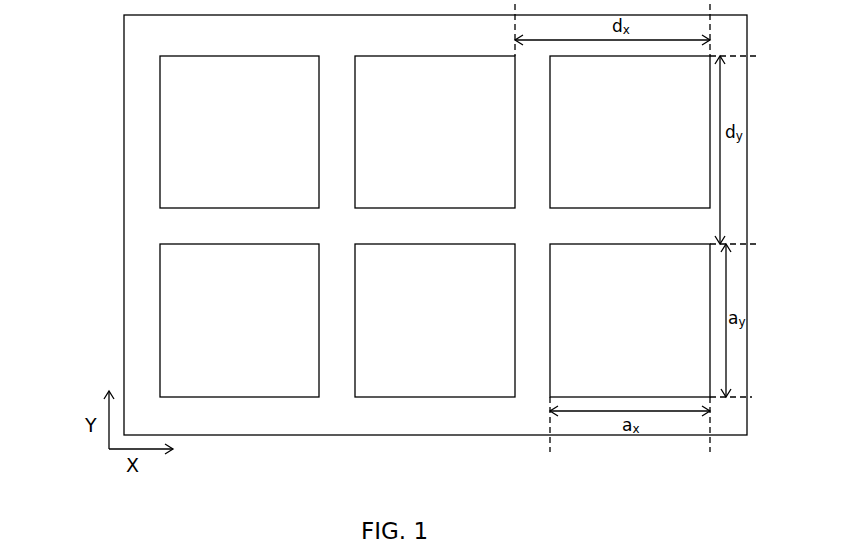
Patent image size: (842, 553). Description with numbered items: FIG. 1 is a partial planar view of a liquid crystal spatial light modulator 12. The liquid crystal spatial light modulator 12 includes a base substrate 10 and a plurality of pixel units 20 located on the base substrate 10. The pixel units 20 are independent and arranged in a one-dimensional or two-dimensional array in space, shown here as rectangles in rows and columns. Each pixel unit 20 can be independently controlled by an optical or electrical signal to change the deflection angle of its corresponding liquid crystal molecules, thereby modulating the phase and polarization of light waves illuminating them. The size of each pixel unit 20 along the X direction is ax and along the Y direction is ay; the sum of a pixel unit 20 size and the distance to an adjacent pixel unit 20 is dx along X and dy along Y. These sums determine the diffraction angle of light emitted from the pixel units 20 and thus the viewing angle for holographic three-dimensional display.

The liquid crystal spatial light modulator 12 is at (68, 93).
The base substrate 10 is at (137, 225).
The pixel unit 20 is at (160, 143).